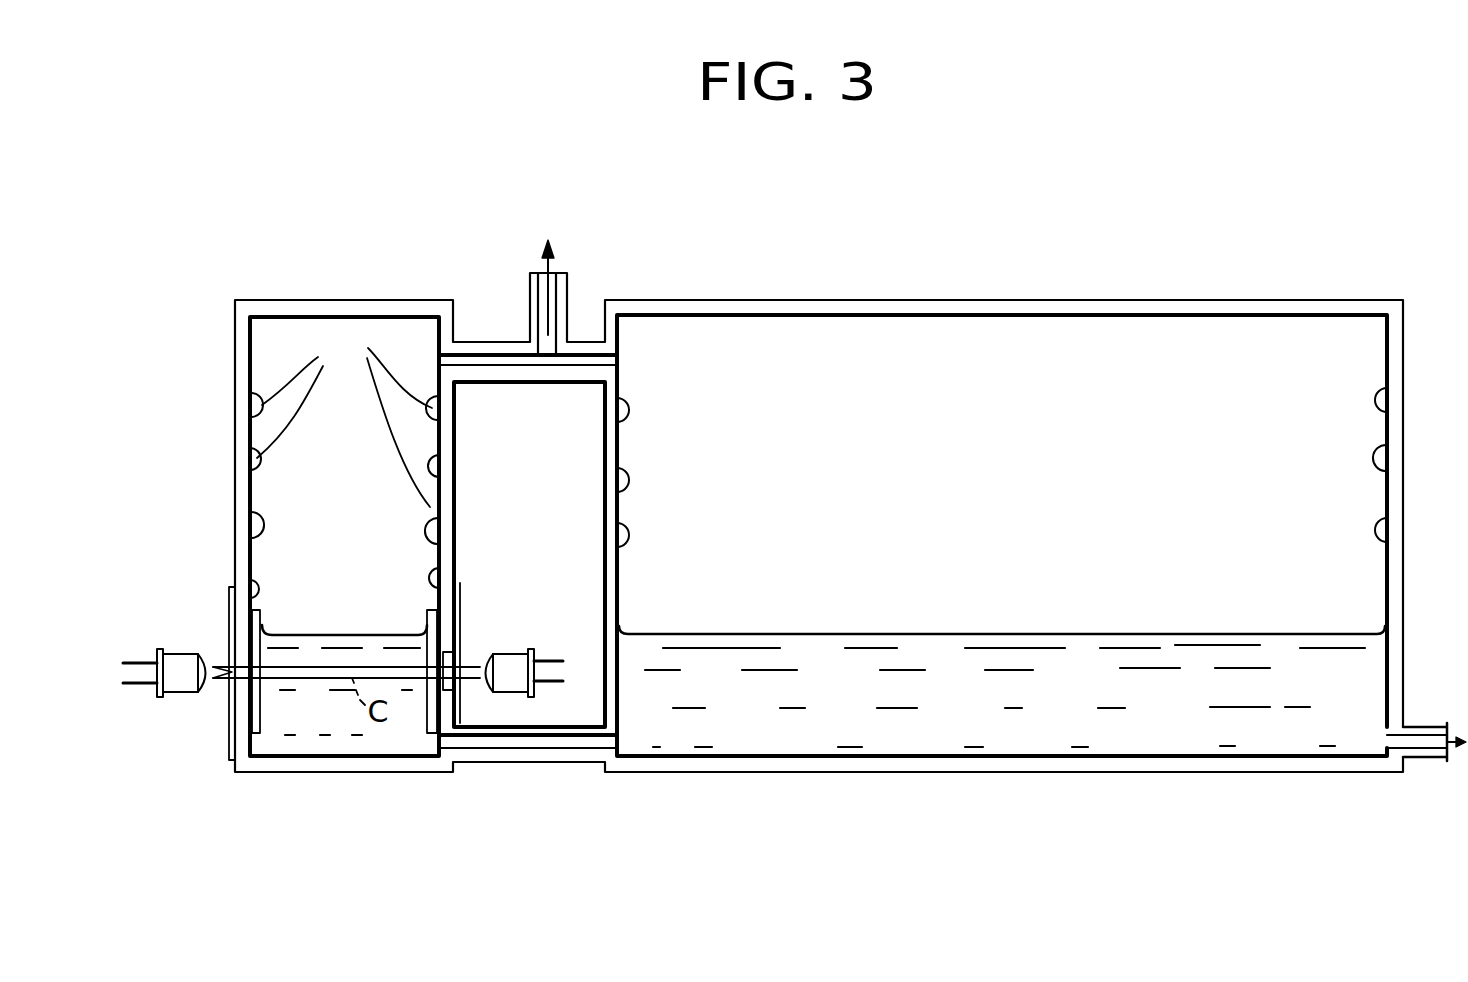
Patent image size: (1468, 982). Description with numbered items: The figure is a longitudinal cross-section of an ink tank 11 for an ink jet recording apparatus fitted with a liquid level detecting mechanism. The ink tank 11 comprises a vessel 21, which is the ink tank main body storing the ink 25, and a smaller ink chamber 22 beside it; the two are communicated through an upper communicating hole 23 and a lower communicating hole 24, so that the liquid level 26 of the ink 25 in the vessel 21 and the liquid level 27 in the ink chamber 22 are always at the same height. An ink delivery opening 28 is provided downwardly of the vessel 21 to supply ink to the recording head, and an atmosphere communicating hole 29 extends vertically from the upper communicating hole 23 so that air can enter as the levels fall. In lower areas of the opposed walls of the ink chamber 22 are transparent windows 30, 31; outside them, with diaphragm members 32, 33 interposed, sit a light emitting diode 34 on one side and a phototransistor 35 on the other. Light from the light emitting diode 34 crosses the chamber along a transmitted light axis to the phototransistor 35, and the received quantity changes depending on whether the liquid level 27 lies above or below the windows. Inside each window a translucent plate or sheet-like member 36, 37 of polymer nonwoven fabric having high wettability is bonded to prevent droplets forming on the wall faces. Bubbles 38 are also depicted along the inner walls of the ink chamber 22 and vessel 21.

The ink tank 11 is at (1039, 298).
The vessel 21 is at (1122, 315).
The ink chamber 22 is at (236, 441).
The upper communicating hole 23 is at (500, 352).
The lower communicating hole 24 is at (500, 750).
The ink 25 is at (930, 650).
The liquid level 26 is at (818, 633).
The liquid level 27 is at (336, 636).
The ink delivery opening 28 is at (1416, 760).
The atmosphere communicating hole 29 is at (556, 325).
The transparent window 30 is at (458, 650).
The transparent window 31 is at (232, 665).
The diaphragm member 32 is at (466, 588).
The diaphragm member 33 is at (230, 600).
The light emitting diode 34 is at (522, 652).
The phototransistor 35 is at (178, 700).
The member having high wettability 36 is at (430, 615).
The member having high wettability 37 is at (262, 612).
The bubbles 38 is at (344, 417).